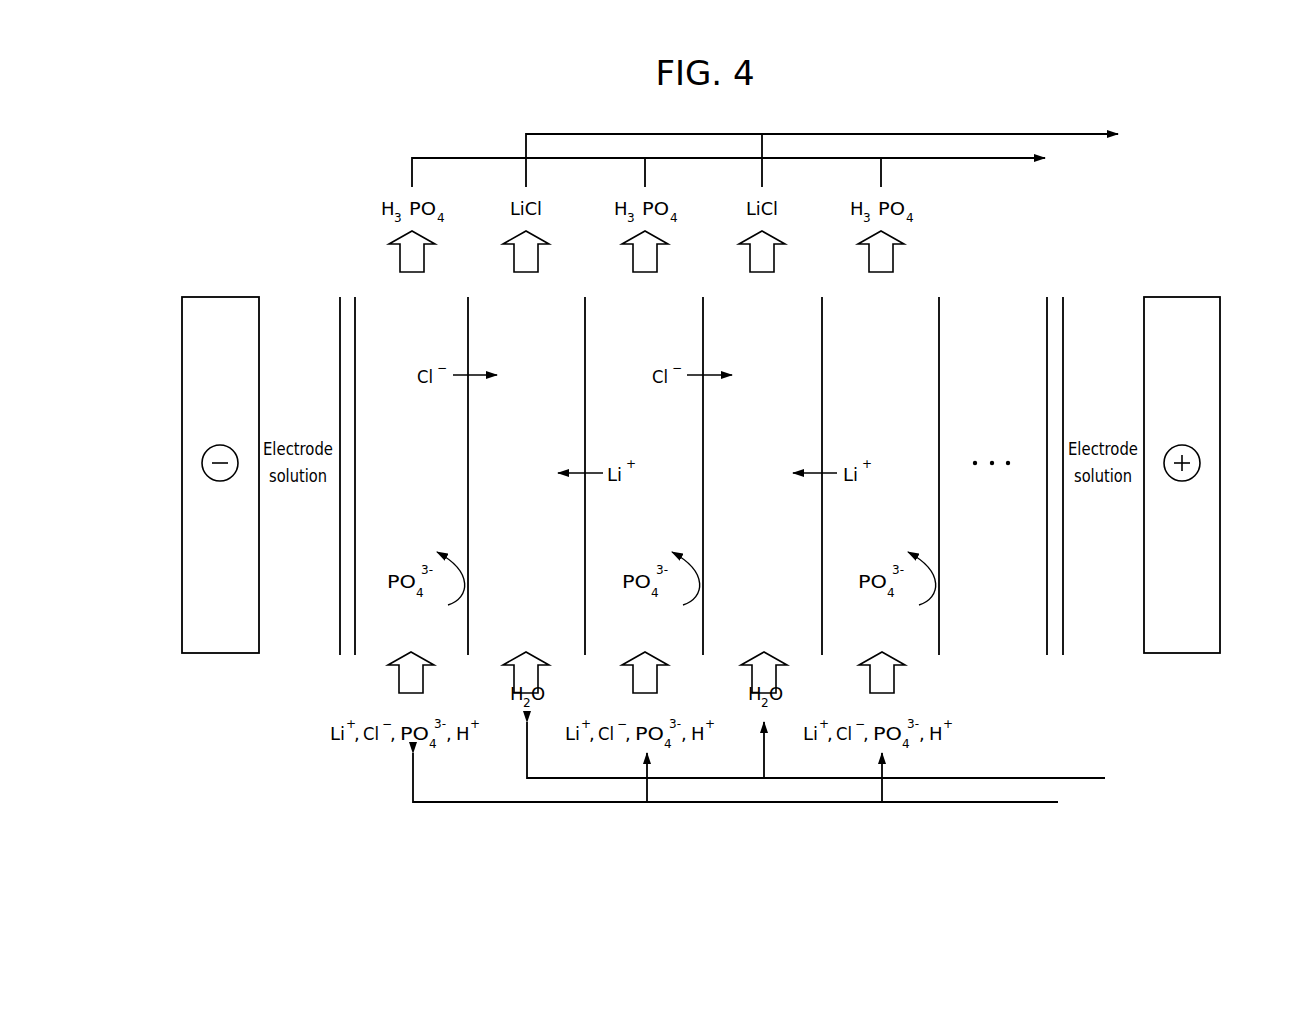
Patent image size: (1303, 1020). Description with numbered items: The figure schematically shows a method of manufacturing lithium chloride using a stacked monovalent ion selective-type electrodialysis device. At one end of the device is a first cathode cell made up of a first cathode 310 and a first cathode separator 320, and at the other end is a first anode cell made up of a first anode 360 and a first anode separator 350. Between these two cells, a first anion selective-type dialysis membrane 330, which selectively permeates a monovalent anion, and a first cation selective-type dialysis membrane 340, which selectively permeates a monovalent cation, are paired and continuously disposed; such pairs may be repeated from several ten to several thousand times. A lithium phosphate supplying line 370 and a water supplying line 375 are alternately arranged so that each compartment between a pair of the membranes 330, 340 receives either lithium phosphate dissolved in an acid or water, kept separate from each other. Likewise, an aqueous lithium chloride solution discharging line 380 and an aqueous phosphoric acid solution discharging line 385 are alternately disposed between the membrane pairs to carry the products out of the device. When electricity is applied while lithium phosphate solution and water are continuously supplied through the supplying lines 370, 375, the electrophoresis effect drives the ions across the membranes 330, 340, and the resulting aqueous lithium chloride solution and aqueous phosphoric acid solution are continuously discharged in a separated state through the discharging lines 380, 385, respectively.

The first cathode 310 is at (220, 459).
The first cathode separator 320 is at (347, 460).
The first anion selective-type dialysis membrane 330 is at (704, 460).
The first cation selective-type dialysis membrane 340 is at (704, 460).
The first anode separator 350 is at (1056, 460).
The first anode 360 is at (1182, 459).
The lithium phosphate supplying line 370 is at (753, 784).
The water supplying line 375 is at (833, 757).
The aqueous lithium chloride solution discharging line 380 is at (844, 154).
The aqueous phosphoric acid solution discharging line 385 is at (750, 166).